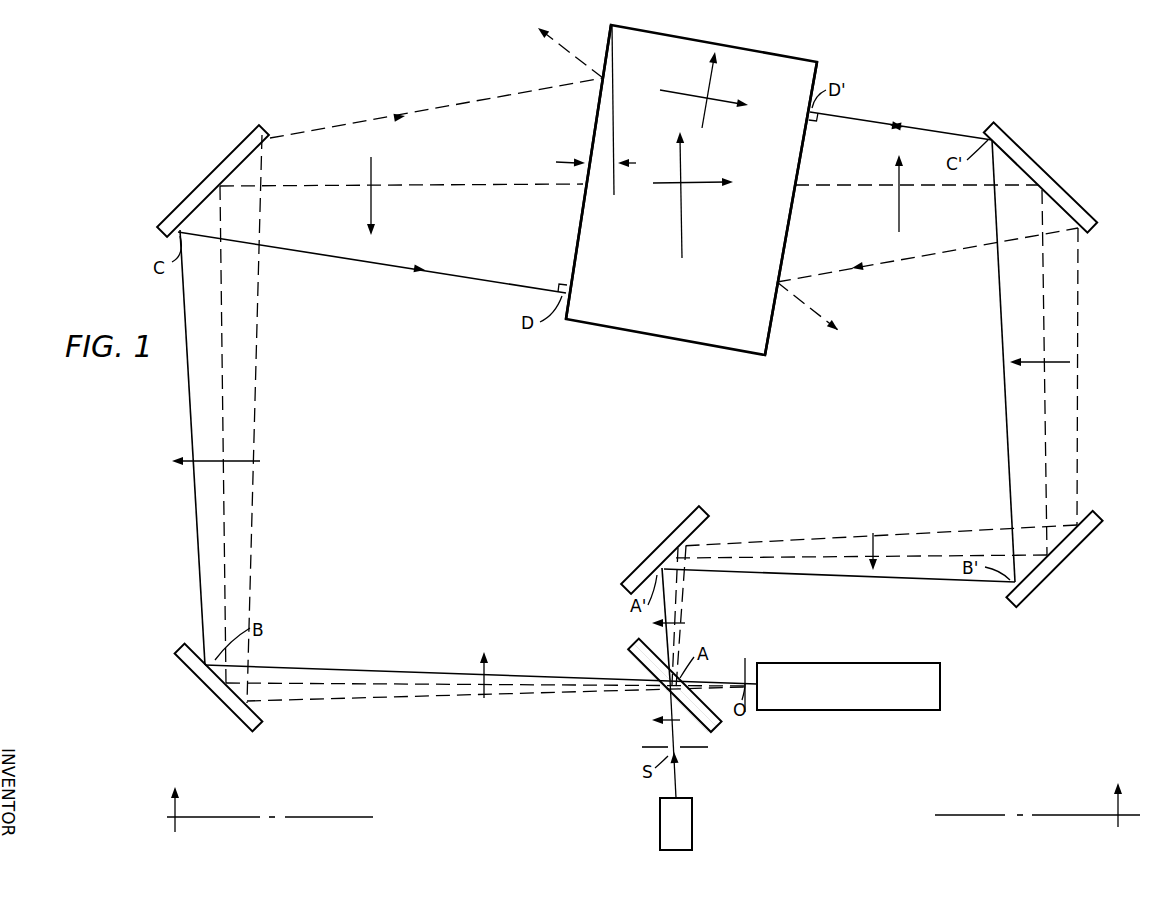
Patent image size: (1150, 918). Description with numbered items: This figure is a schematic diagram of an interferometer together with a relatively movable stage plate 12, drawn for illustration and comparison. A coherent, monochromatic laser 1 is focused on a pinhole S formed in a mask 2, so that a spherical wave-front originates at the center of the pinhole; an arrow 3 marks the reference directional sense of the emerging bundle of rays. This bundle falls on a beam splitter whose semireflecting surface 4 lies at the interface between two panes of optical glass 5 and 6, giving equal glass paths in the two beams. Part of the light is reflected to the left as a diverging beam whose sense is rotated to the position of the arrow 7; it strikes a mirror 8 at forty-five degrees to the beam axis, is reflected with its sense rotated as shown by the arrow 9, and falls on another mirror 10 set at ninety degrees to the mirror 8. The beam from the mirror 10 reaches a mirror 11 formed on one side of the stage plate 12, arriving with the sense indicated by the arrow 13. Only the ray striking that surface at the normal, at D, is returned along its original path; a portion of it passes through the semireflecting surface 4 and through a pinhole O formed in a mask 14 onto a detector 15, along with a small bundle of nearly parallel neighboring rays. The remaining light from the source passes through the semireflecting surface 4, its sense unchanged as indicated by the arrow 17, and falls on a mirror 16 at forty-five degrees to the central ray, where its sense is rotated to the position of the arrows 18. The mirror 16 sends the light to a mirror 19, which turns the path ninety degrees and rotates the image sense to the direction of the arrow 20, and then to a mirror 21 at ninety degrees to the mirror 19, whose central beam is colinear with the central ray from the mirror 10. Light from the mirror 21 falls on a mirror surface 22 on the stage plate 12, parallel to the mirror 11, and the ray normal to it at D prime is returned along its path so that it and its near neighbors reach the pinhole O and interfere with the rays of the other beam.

The laser 1 is at (665, 818).
The mask 2 is at (648, 746).
The arrow 3 is at (666, 717).
The semireflecting surface 4 is at (632, 656).
The pane of optical glass 5 is at (641, 640).
The pane of optical glass 6 is at (632, 658).
The arrow 7 is at (486, 694).
The mirror 8 is at (225, 708).
The arrow 9 is at (245, 460).
The mirror 10 is at (178, 208).
The mirror 11 is at (575, 232).
The stage plate 12 is at (660, 320).
The arrow 13 is at (372, 215).
The mask 14 is at (748, 668).
The detector 15 is at (857, 664).
The mirror 16 is at (652, 555).
The arrow 17 is at (680, 626).
The arrows 18 is at (874, 550).
The mirror 19 is at (1058, 562).
The arrow 20 is at (1030, 365).
The mirror 21 is at (1035, 170).
The mirror surface 22 is at (770, 332).